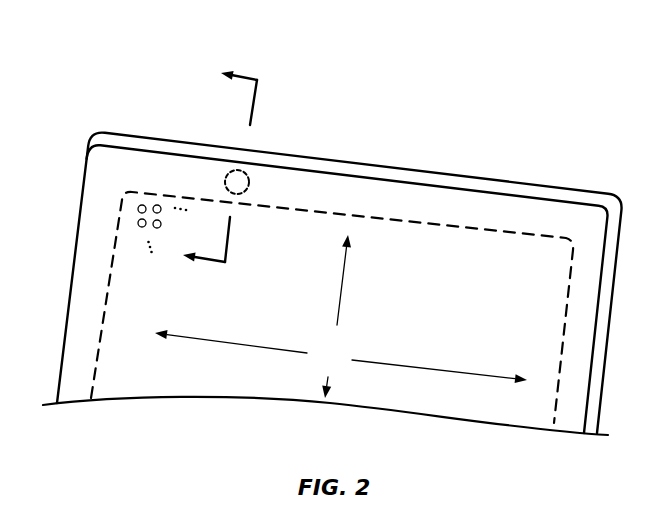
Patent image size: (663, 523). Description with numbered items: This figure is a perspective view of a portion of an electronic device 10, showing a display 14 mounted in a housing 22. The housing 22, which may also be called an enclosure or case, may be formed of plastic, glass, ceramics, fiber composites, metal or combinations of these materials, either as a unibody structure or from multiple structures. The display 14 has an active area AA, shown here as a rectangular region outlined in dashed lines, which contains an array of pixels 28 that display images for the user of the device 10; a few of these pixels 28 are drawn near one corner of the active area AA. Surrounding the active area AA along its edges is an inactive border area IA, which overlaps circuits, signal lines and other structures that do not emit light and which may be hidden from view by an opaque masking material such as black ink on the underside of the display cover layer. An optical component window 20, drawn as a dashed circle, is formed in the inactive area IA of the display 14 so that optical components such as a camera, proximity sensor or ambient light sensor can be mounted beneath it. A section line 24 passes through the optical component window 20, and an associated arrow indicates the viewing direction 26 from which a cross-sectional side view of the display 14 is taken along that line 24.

The electronic device 10 is at (462, 72).
The display 14 is at (321, 214).
The optical component window 20 is at (250, 181).
The housing 22 is at (598, 190).
The line 24 is at (253, 103).
The direction 26 is at (257, 79).
The pixels 28 is at (142, 205).
The inactive border area IA is at (490, 197).
The active area AA is at (341, 316).